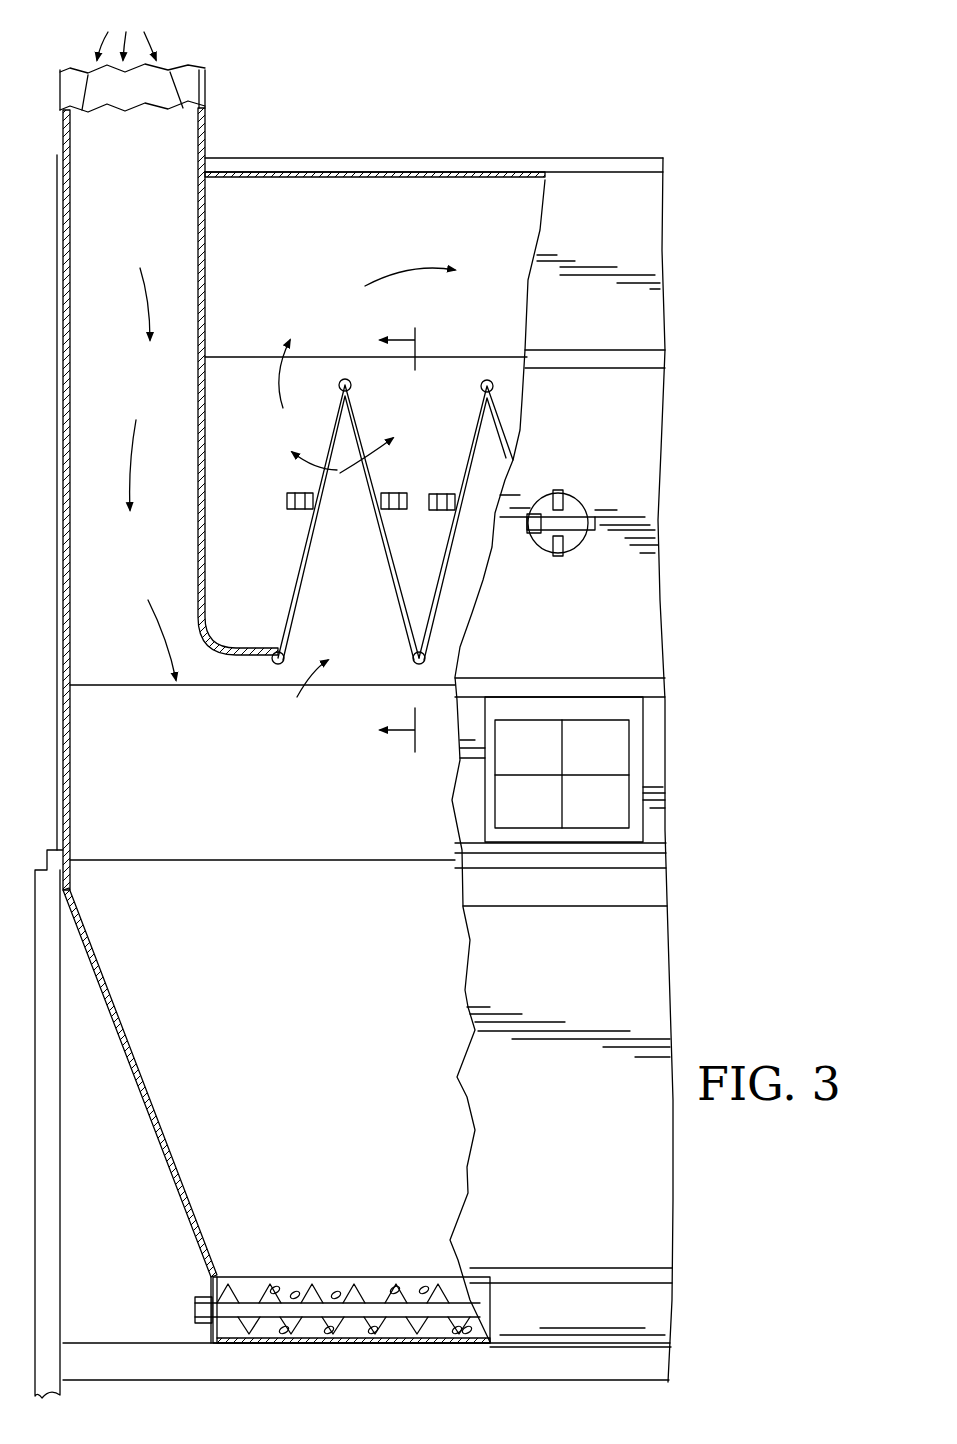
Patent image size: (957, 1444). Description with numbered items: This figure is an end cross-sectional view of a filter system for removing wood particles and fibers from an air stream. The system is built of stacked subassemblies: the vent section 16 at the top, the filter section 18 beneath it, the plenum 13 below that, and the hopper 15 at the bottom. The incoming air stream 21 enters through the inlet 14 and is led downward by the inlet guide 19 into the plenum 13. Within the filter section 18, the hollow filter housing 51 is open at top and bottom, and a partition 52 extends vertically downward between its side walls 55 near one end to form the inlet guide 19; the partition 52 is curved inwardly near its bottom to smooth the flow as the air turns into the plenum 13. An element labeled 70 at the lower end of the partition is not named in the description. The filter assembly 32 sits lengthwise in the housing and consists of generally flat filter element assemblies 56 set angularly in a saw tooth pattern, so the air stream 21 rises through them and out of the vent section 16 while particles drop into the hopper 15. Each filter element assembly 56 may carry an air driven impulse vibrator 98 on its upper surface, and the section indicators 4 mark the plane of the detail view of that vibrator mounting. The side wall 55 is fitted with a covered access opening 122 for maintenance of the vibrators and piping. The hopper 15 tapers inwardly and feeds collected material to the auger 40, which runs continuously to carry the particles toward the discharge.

The air stream 21 is at (126, 31).
The inlet 14 is at (205, 128).
The inlet guide 19 is at (180, 455).
The vent section 16 is at (640, 258).
The partition 52 is at (205, 420).
The section line 4- 4 is at (401, 537).
The filter housing 51 is at (640, 418).
The impulse vibrator 98 is at (442, 492).
The filter assembly 32 is at (305, 550).
The filter element assembly 56 is at (437, 588).
The pivot 70 is at (278, 648).
The covered access opening 122 is at (585, 502).
The filter section 18 is at (655, 499).
The side wall 55 is at (640, 575).
The plenum 13 is at (665, 772).
The hopper 15 is at (205, 1172).
The auger 40 is at (235, 1290).